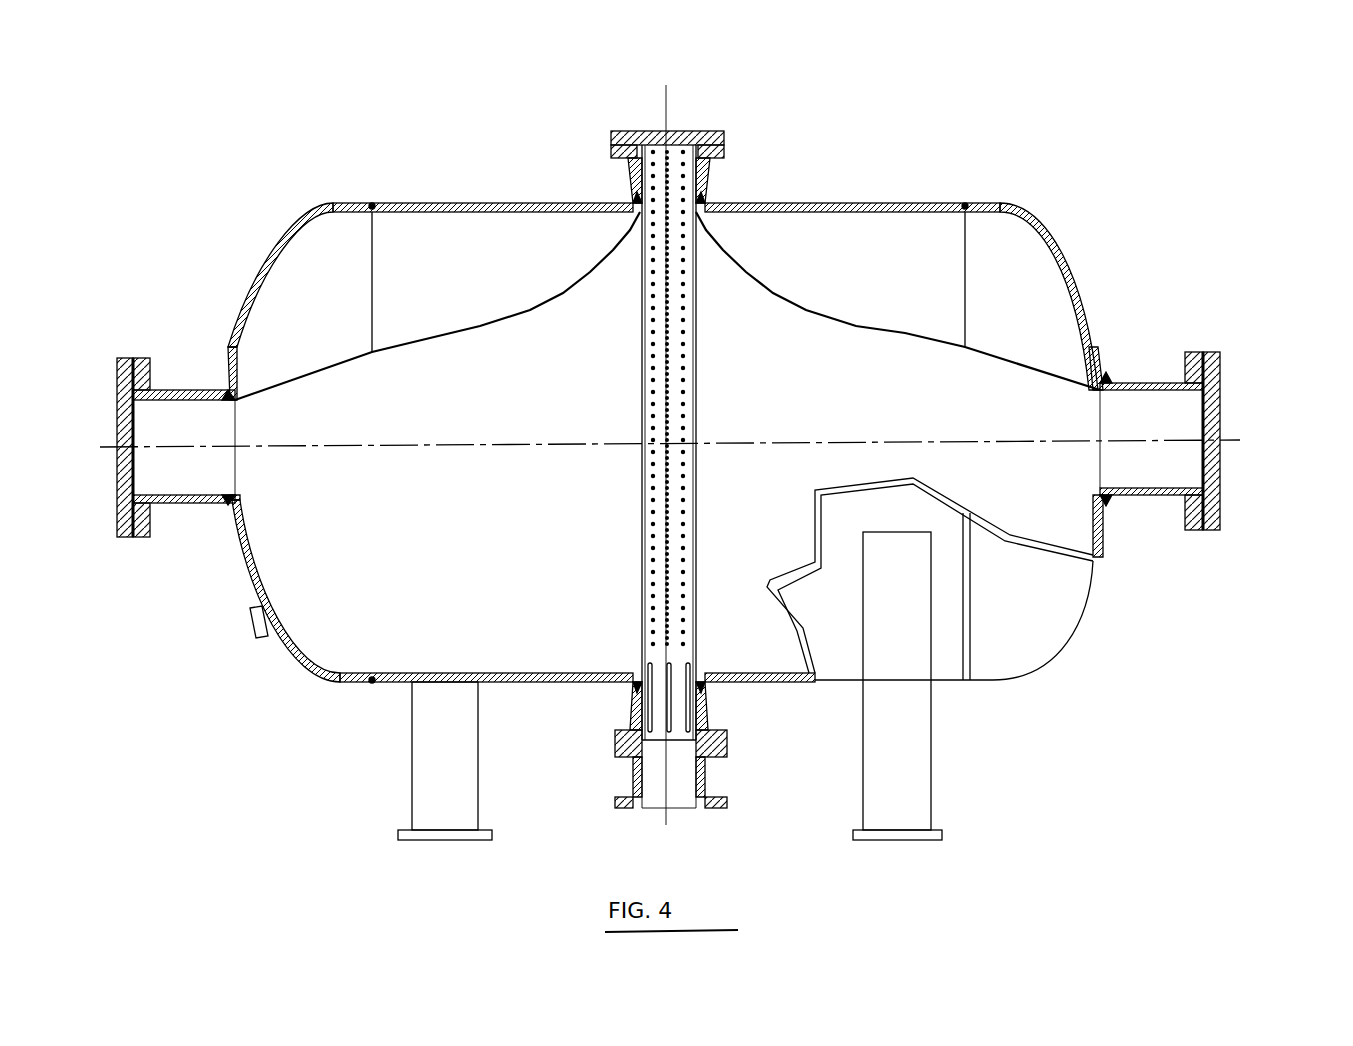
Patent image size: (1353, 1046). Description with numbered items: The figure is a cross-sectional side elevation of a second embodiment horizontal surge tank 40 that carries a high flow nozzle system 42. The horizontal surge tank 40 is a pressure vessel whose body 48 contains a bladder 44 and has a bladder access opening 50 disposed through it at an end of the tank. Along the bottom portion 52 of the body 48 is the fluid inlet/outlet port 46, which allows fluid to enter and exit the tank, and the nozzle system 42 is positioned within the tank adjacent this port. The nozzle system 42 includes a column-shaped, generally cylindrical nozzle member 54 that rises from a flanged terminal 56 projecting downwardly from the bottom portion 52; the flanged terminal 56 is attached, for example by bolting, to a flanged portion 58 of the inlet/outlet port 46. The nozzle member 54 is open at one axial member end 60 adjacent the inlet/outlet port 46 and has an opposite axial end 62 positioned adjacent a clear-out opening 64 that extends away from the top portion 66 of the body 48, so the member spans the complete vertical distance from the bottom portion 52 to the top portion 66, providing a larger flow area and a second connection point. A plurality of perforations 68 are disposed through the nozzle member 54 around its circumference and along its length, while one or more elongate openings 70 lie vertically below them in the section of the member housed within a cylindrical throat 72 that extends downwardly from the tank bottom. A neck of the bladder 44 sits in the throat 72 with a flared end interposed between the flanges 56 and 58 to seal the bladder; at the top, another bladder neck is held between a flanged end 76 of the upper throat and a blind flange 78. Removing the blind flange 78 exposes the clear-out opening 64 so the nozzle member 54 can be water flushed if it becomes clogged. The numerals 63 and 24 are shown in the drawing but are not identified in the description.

The horizontal surge tank 40 is at (1072, 201).
The high flow nozzle system 42 is at (700, 430).
The bladder 44 is at (880, 320).
The fluid inlet/outlet port 46 is at (652, 803).
The tank body 48 is at (863, 204).
The bladder access opening 50 is at (1232, 430).
The bottom portion 52 is at (757, 685).
The nozzle member 54 is at (690, 490).
The flanged terminal 56 is at (628, 732).
The flanged portion 58 is at (715, 755).
The open axial member end 60 is at (690, 760).
The opposite axial end 62 is at (682, 140).
The tube wall 63 is at (656, 567).
The clear-out opening 64 is at (699, 143).
The top portion 66 is at (565, 204).
The perforations 68 is at (683, 362).
The elongate openings 70 is at (690, 690).
The cylindrical throat 72 is at (633, 705).
The flanged end 76 is at (722, 150).
The blind flange 78 is at (735, 136).
The weld joint 24 is at (705, 178).